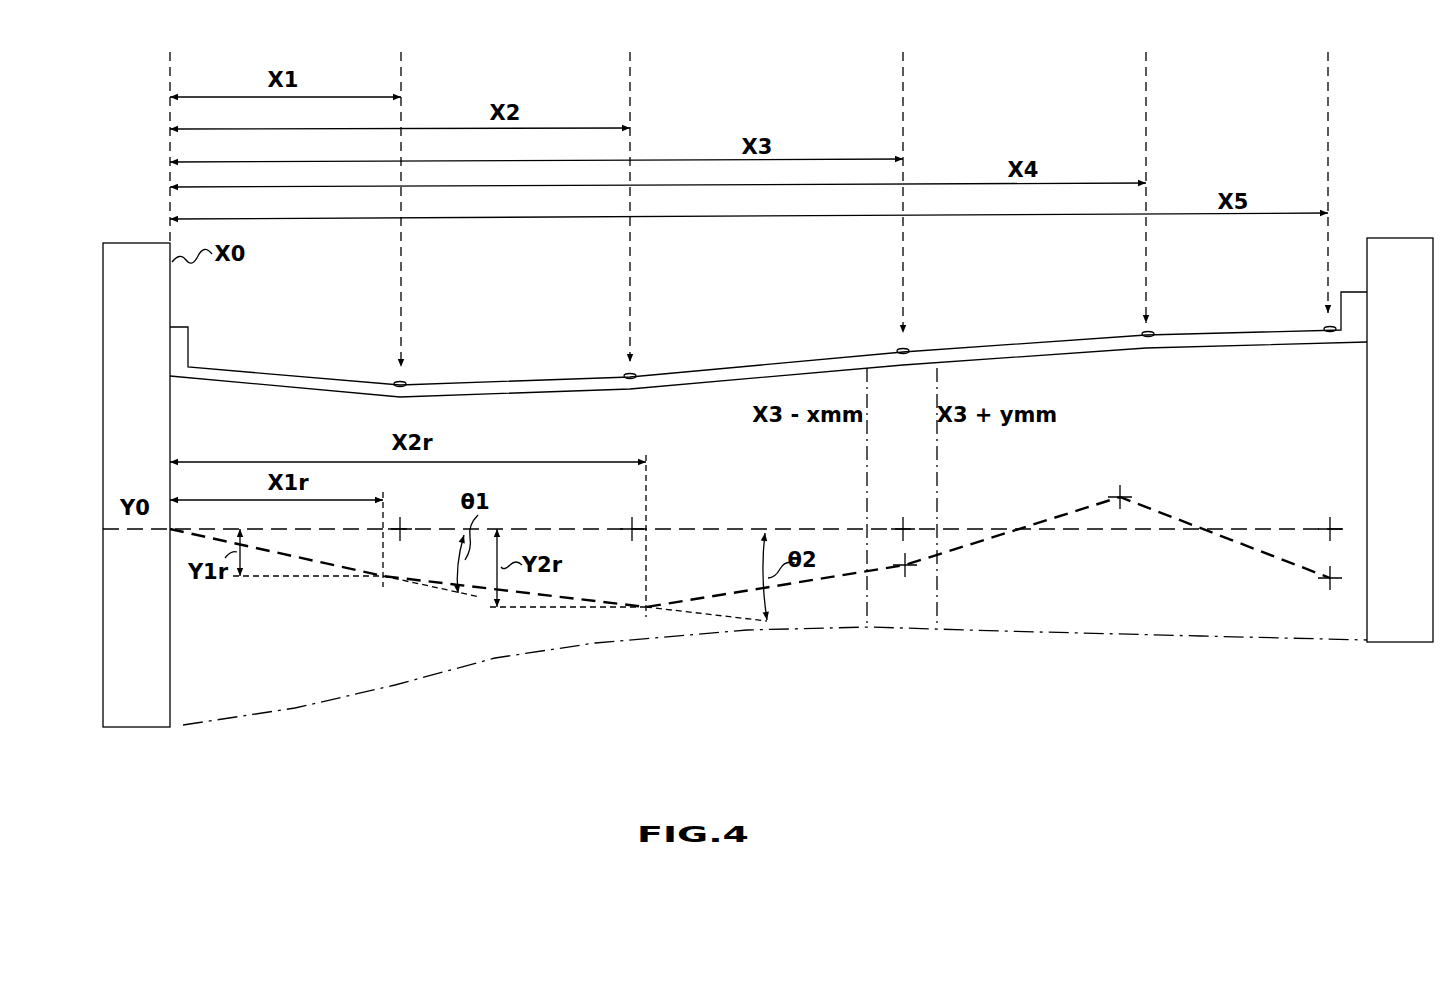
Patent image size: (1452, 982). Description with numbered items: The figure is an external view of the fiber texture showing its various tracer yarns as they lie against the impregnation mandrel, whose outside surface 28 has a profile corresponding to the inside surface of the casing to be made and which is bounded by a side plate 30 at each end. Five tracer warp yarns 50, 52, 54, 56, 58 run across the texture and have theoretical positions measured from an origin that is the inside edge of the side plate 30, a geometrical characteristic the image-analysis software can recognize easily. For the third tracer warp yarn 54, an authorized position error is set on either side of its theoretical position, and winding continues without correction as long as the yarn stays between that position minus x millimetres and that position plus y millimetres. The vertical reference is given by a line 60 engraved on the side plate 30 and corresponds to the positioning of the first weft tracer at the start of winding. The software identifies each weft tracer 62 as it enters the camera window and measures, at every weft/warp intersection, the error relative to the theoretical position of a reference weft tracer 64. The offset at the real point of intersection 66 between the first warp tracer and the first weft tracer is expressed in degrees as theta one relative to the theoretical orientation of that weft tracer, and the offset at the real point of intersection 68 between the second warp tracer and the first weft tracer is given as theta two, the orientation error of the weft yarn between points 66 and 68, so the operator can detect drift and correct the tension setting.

The outside surface 28 is at (1005, 345).
The side plate 30 is at (1397, 250).
The first tracer warp yarn 50 is at (395, 380).
The second tracer warp yarn 52 is at (625, 373).
The third tracer warp yarn 54 is at (898, 348).
The fourth tracer warp yarn 56 is at (1140, 329).
The fifth tracer warp yarn 58 is at (1321, 325).
The engraved line 60 is at (130, 537).
The weft tracer 62 is at (984, 543).
The reference weft tracer 64 is at (775, 527).
The real point of intersection 66 is at (383, 581).
The real point of intersection 68 is at (649, 605).